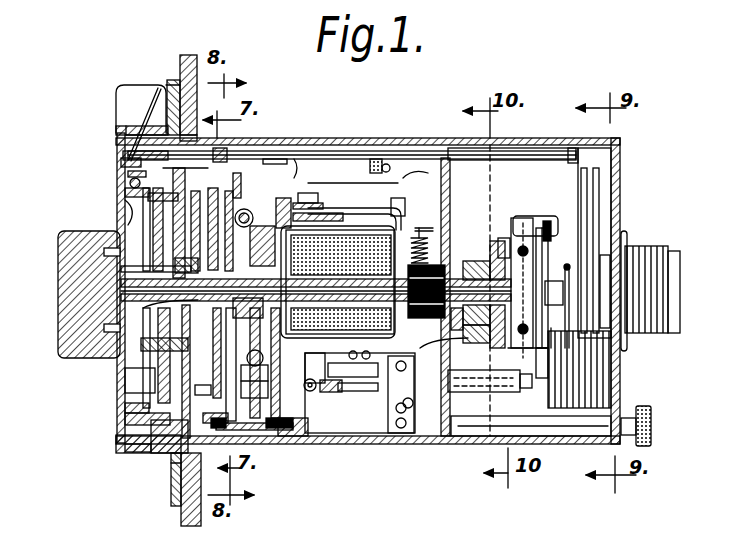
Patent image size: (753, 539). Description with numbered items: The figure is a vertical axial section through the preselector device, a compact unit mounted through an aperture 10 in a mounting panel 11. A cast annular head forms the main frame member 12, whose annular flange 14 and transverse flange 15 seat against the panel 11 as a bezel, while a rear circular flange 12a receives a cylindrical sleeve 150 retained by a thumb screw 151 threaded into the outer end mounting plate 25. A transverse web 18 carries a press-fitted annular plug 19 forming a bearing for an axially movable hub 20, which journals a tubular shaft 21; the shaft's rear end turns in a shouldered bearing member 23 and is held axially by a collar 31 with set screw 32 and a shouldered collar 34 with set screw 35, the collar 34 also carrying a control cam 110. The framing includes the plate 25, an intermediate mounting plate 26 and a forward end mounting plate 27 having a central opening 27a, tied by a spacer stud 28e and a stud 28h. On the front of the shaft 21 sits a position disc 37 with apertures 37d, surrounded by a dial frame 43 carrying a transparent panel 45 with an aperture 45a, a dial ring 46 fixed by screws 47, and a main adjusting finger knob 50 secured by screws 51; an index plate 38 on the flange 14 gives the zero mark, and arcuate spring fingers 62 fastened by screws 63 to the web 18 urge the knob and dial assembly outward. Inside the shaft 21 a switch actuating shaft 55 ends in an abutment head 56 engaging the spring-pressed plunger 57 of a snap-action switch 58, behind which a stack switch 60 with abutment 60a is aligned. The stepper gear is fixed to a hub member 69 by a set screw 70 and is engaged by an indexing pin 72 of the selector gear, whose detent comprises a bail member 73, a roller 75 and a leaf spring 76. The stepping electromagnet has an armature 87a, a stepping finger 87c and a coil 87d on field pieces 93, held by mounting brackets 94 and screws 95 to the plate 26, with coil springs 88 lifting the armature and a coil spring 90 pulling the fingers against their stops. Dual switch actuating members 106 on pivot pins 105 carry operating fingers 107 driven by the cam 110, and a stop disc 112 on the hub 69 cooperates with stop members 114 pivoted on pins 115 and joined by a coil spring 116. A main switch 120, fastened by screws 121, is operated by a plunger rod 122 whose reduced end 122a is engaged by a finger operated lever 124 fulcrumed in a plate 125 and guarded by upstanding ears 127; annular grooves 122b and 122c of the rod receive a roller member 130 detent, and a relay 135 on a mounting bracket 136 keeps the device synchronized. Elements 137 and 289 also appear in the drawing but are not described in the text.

The aperture 10 is at (168, 468).
The mounting panel 11 is at (183, 497).
The main frame member 12 is at (122, 446).
The circular flange 12a is at (192, 122).
The annular flange 14 is at (108, 435).
The transverse flange 15 is at (168, 480).
The transverse web 18 is at (167, 367).
The annular plug 19 is at (113, 262).
The hub 20 is at (464, 138).
The tubular shaft 21 is at (426, 192).
The shouldered bearing member 23 is at (450, 253).
The outer end mounting plate 25 is at (603, 180).
The intermediate mounting plate 26 is at (358, 393).
The forward end mounting plate 27 is at (236, 200).
The central opening 27a is at (242, 447).
The spacer stud 28e is at (432, 437).
The stud 28h is at (262, 437).
The collar 31 is at (425, 312).
The set screw 32 is at (442, 180).
The shouldered collar 34 is at (490, 233).
The set screw 35 is at (470, 253).
The position disc 37 is at (116, 354).
The apertures 37d is at (117, 398).
The plate 38 is at (112, 118).
The dial frame 43 is at (117, 200).
The transparent panel 45 is at (135, 198).
The aperture 45a is at (117, 372).
The dial ring 46 is at (121, 174).
The screws 47 is at (117, 408).
The main adjusting finger knob 50 is at (58, 335).
The screws 51 is at (96, 243).
The switch actuating shaft 55 is at (113, 278).
The abutment head 56 is at (521, 258).
The spring-pressed plunger 57 is at (521, 301).
The snap-action switch 58 is at (517, 212).
The stack switch 60 is at (528, 365).
The abutment 60a is at (545, 246).
The spring fingers 62 is at (117, 184).
The screws 63 is at (113, 155).
The hub member 69 is at (150, 300).
The set screw 70 is at (276, 211).
The indexing pin 72 is at (200, 437).
The bail member 73 is at (240, 168).
The roller 75 is at (266, 150).
The leaf spring 76 is at (212, 140).
The armature 87a is at (350, 220).
The stepping finger 87c is at (305, 186).
The coil 87d is at (353, 169).
The coil springs 88 is at (410, 220).
The coil spring 90 is at (296, 195).
The field pieces 93 is at (361, 347).
The mounting brackets 94 is at (351, 364).
The screws 95 is at (367, 420).
The pivot pins 105 is at (474, 392).
The switch actuating members 106 is at (507, 392).
The operating fingers 107 is at (464, 329).
The control cam 110 is at (439, 338).
The disc 112 is at (313, 359).
The stop members 114 is at (296, 444).
The pins 115 is at (291, 390).
The coil spring 116 is at (316, 391).
The main switch 120 is at (612, 178).
The screws 121 is at (632, 372).
The plunger rod 122 is at (300, 143).
The reduced portion 122a is at (115, 147).
The annular groove 122b is at (366, 140).
The annular groove 122c is at (380, 150).
The finger operated lever 124 is at (148, 80).
The plate 125 is at (114, 95).
The upstanding ears 127 is at (124, 77).
The roller member 130 is at (412, 137).
The relay 135 is at (365, 437).
The mounting bracket 136 is at (412, 437).
The motor 137 is at (652, 240).
The cylindrical sleeve 150 is at (290, 140).
The thumb screw 151 is at (657, 412).
The washer 289 is at (165, 456).